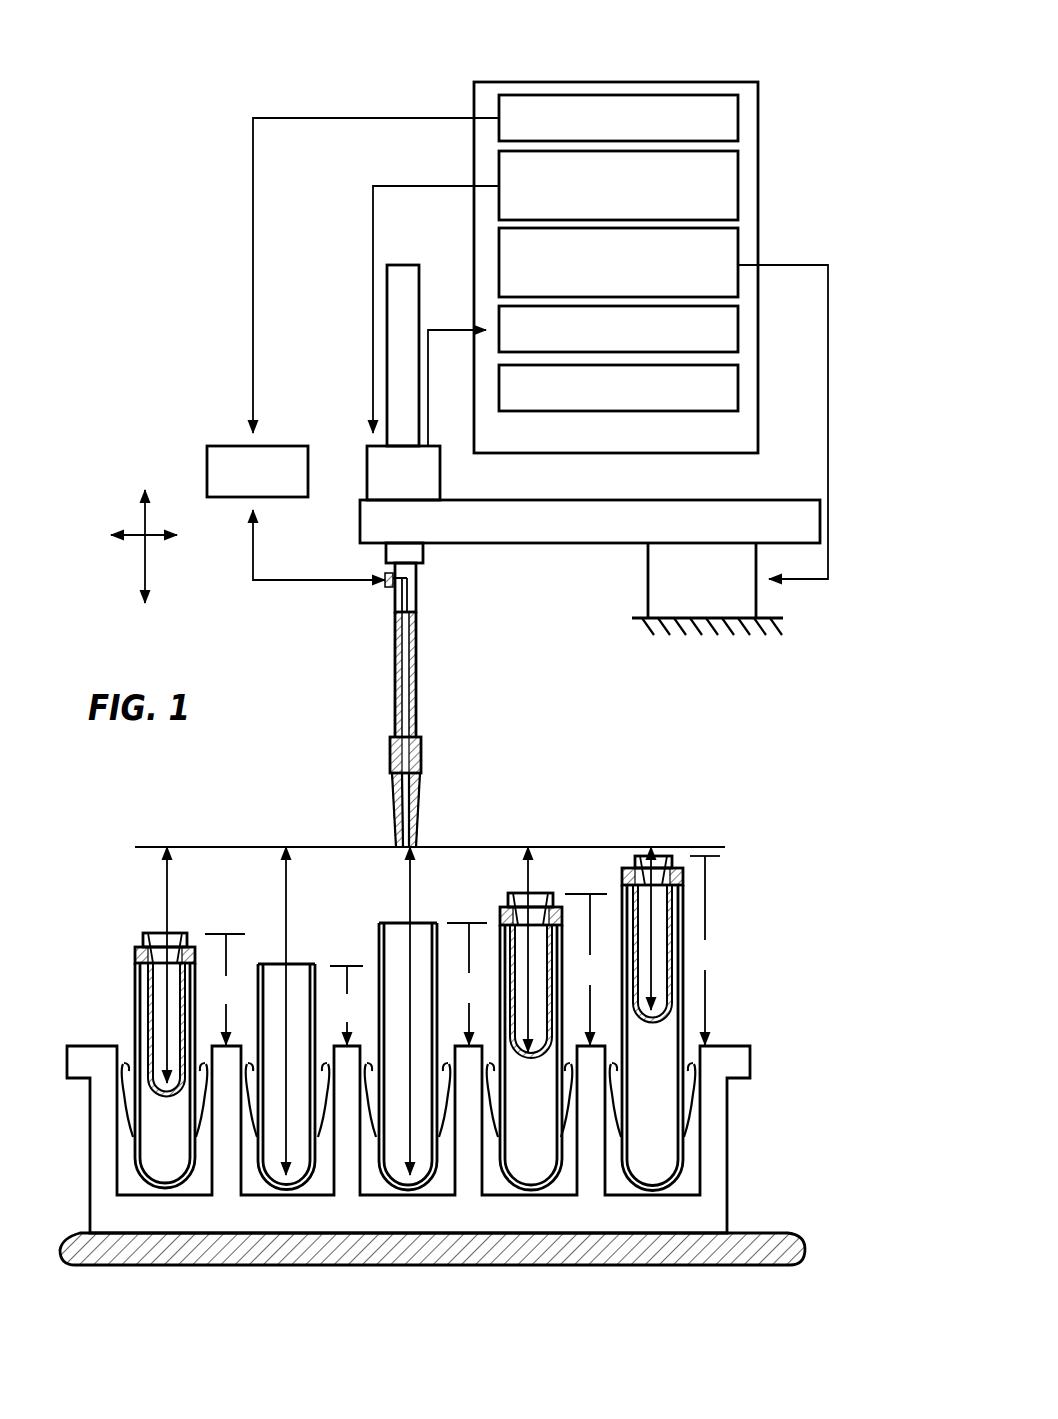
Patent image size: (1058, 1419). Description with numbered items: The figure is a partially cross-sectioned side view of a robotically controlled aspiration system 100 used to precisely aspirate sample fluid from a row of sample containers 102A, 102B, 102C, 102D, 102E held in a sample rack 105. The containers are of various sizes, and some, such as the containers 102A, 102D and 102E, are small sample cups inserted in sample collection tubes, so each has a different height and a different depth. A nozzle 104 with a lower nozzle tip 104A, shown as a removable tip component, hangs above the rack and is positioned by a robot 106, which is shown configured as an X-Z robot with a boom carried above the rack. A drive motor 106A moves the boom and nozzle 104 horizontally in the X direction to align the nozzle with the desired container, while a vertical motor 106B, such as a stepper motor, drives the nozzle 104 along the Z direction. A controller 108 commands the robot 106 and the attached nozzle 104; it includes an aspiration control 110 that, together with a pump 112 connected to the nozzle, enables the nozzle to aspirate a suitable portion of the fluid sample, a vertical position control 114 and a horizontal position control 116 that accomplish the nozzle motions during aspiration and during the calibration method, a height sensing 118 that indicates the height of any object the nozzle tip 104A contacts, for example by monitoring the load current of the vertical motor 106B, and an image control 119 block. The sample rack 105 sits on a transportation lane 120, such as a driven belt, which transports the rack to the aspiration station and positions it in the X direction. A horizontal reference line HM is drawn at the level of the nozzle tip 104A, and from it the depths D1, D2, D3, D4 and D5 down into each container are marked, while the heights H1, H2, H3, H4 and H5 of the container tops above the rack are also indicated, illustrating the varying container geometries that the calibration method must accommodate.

The aspiration system 100 is at (181, 238).
The sample container 102A is at (134, 956).
The sample container 102B is at (259, 962).
The sample container 102C is at (379, 921).
The sample container 102D is at (508, 892).
The sample container 102E is at (634, 855).
The nozzle 104 is at (401, 695).
The nozzle tip 104A is at (415, 845).
The sample rack 105 is at (100, 1044).
The robot 106 is at (754, 492).
The motor 106A is at (646, 580).
The vertical motor 106B is at (366, 445).
The controller 108 is at (606, 78).
The aspiration control 110 is at (738, 118).
The pump 112 is at (211, 434).
The vertical position control 114 is at (738, 186).
The horizontal position control 116 is at (738, 248).
The height sensing 118 is at (738, 329).
The image control 119 is at (738, 388).
The transportation lane 120 is at (748, 1222).
The home/measurement reference level HM is at (468, 846).
The depth dimension tube A D1 is at (168, 965).
The depth dimension tube B D2 is at (288, 1011).
The depth dimension tube C D3 is at (413, 1011).
The depth dimension tube D D4 is at (534, 862).
The depth dimension tube E D5 is at (673, 870).
The height dimension tube A H1 is at (225, 989).
The height dimension tube B H2 is at (346, 1005).
The height dimension tube C H3 is at (467, 984).
The height dimension tube D H4 is at (586, 969).
The height dimension tube E H5 is at (706, 950).